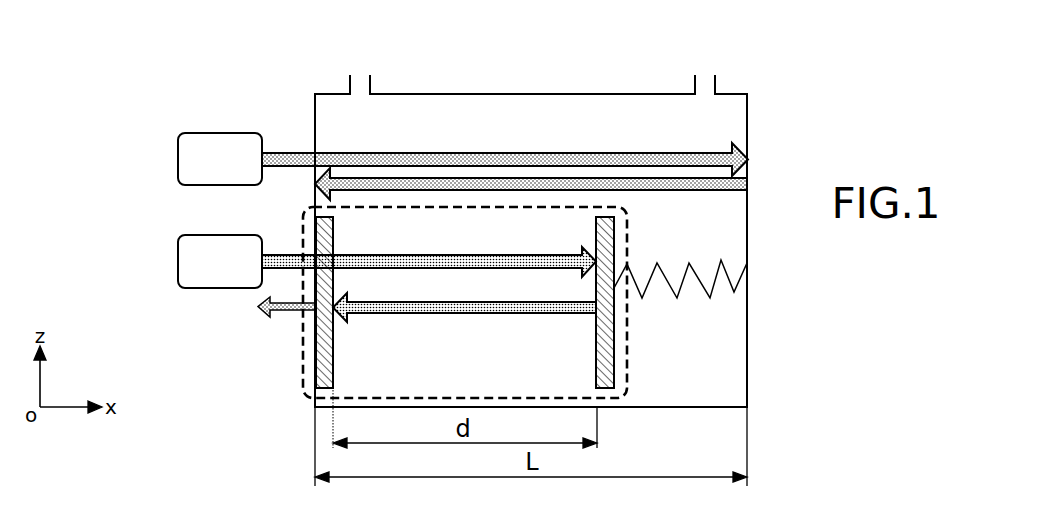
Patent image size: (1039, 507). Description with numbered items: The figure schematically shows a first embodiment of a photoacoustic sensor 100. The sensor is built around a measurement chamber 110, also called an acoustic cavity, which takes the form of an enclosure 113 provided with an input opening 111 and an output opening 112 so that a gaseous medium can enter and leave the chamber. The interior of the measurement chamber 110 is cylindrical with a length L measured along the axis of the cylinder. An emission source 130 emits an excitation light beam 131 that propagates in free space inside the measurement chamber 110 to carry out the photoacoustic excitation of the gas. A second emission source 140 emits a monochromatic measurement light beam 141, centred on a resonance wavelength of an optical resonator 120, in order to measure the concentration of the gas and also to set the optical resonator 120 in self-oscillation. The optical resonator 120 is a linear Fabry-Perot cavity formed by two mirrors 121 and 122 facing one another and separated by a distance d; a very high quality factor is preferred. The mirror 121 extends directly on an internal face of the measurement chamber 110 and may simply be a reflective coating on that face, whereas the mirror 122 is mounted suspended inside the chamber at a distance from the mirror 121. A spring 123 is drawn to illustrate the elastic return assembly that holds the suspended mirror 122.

The photoacoustic sensor 100 is at (812, 78).
The measurement chamber 110 is at (493, 94).
The input opening 111 is at (359, 72).
The output opening 112 is at (704, 72).
The enclosure 113 is at (588, 105).
The optical resonator 120 is at (303, 361).
The mirror 121 is at (318, 372).
The mirror 122 is at (605, 343).
The spring 123 is at (712, 283).
The emission source 130 is at (183, 160).
The excitation light beam 131 is at (290, 152).
The emission source 140 is at (183, 260).
The measurement light beam 141 is at (415, 254).